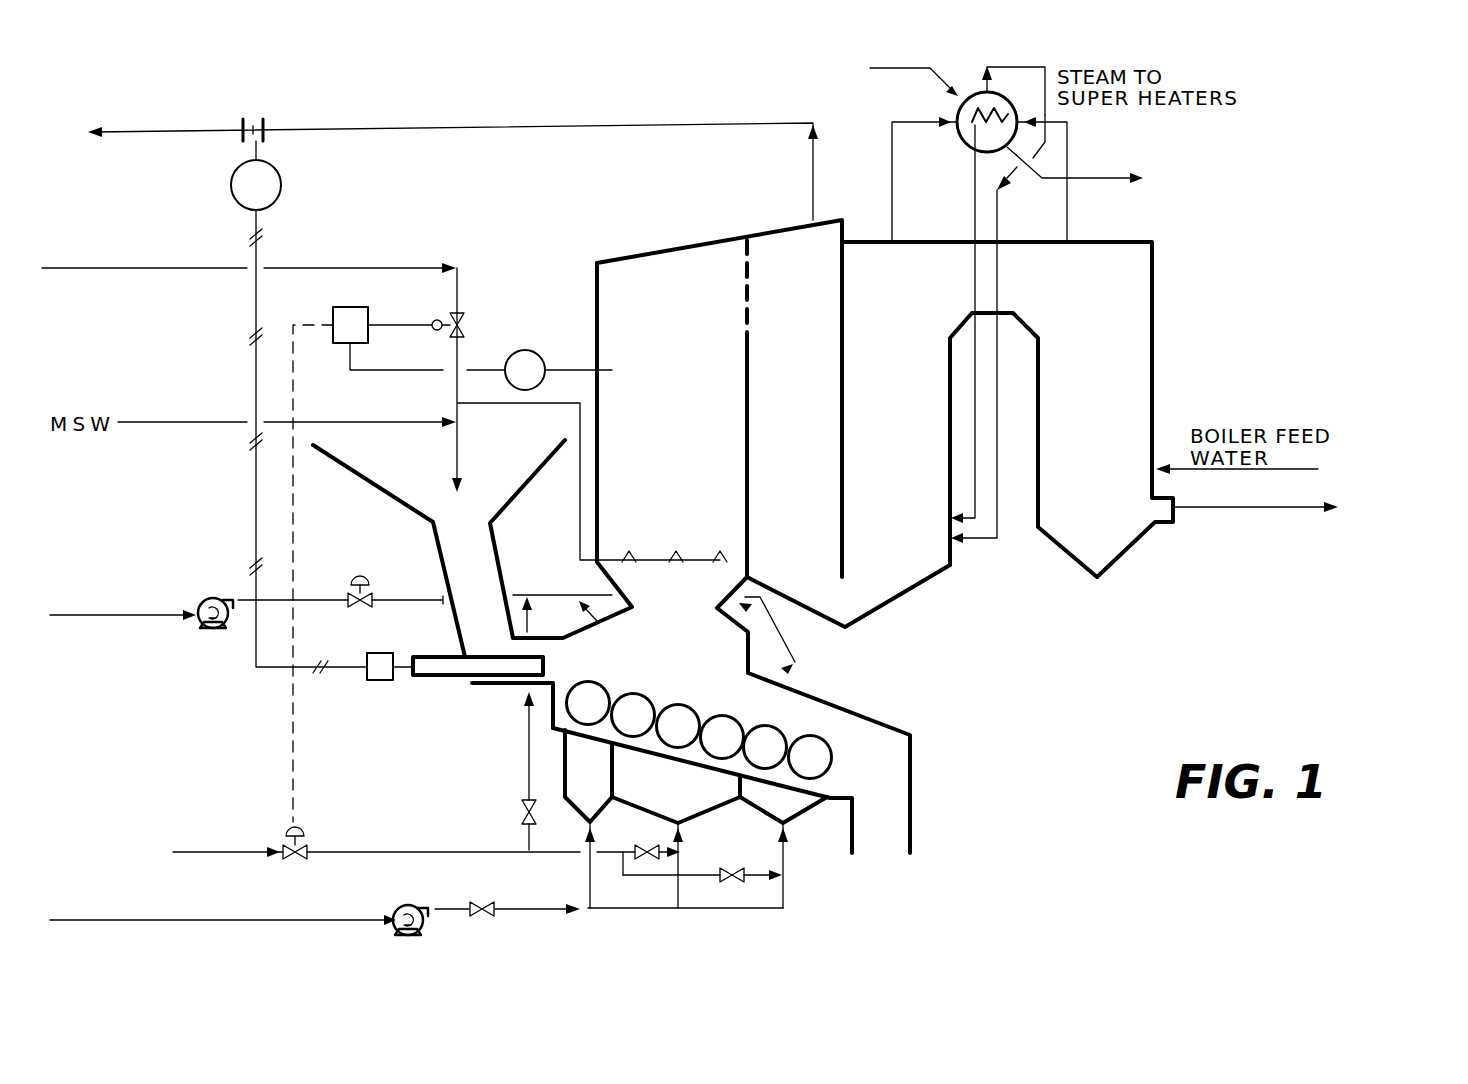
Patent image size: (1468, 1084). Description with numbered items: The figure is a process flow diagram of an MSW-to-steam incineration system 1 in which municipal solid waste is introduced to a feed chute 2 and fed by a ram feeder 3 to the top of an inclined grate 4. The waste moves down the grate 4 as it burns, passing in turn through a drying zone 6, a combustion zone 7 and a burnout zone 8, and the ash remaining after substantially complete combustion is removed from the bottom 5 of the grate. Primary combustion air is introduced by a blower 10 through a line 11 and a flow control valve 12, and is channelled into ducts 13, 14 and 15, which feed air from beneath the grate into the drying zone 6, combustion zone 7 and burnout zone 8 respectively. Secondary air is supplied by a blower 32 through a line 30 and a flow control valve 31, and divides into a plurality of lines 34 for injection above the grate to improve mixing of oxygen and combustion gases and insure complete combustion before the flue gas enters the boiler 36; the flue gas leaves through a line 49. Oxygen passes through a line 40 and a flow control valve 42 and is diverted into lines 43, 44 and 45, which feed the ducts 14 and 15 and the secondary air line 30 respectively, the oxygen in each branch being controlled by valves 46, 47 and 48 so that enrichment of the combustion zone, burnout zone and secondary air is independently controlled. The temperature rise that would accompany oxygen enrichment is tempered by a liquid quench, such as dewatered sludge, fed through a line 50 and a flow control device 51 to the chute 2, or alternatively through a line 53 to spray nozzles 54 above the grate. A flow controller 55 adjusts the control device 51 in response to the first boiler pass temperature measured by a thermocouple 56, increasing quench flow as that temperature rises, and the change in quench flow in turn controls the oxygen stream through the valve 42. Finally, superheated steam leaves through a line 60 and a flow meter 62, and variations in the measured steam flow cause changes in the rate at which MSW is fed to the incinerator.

The MSW-to-steam incineration system 1 is at (592, 272).
The feed chute 2 is at (360, 487).
The ram feeder 3 is at (441, 681).
The inclined grate 4 is at (712, 751).
The bottom of grate 5 is at (893, 840).
The drying zone 6 is at (599, 682).
The combustion zone 7 is at (745, 717).
The burnout zone 8 is at (830, 733).
The blower 10 is at (392, 926).
The primary air line 11 is at (457, 906).
The flow control valve 12 is at (480, 915).
The primary air duct 13 is at (600, 810).
The primary air duct 14 is at (700, 818).
The primary air duct 15 is at (795, 818).
The secondary air line 30 is at (430, 602).
The flow control valve 31 is at (366, 586).
The blower 32 is at (195, 626).
The secondary air lines 34 is at (580, 605).
The boiler 36 is at (1156, 372).
The oxygen line 40 is at (224, 851).
The oxygen flow control valve 42 is at (307, 850).
The oxygen line 43 is at (660, 844).
The oxygen line 44 is at (764, 876).
The oxygen line 45 is at (525, 751).
The valve 46 is at (632, 846).
The valve 47 is at (730, 870).
The valve 48 is at (527, 804).
The flue gas line 49 is at (1196, 509).
The quench line 50 is at (215, 268).
The flow control device 51 is at (462, 326).
The quench line 53 is at (578, 543).
The spray nozzles 54 is at (716, 580).
The flow controller 55 is at (338, 304).
The thermocouple 56 is at (529, 352).
The superheated steam line 60 is at (574, 124).
The flow meter 62 is at (271, 124).